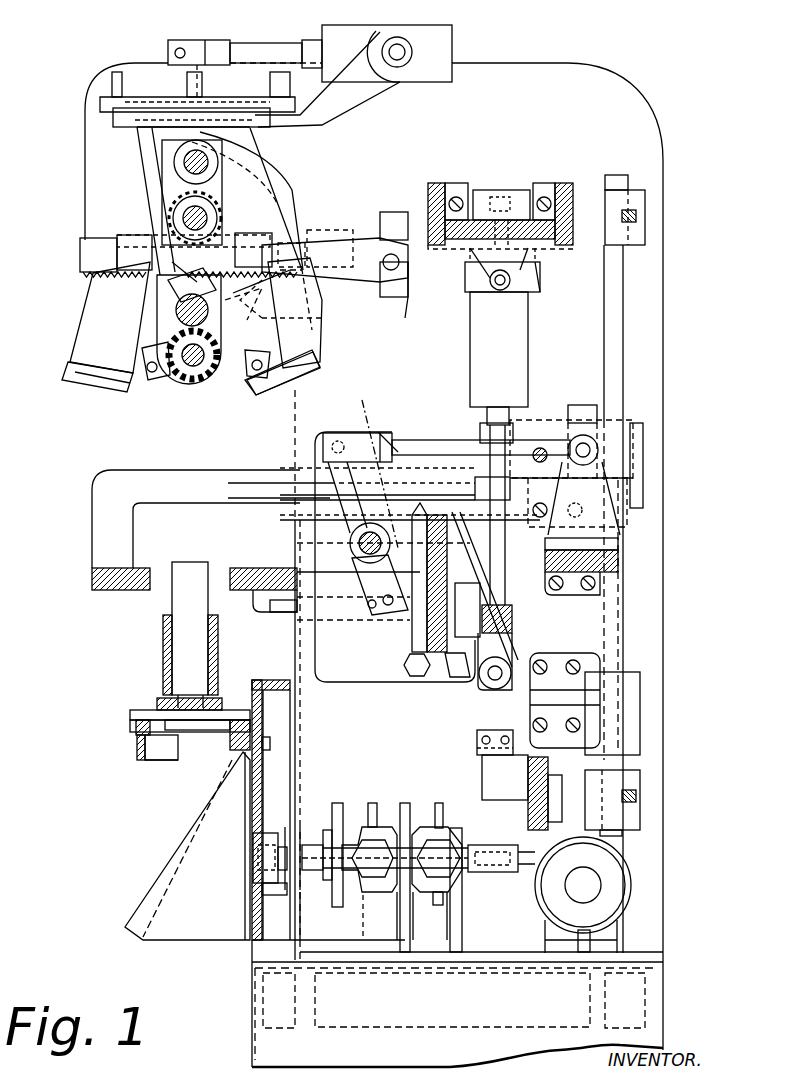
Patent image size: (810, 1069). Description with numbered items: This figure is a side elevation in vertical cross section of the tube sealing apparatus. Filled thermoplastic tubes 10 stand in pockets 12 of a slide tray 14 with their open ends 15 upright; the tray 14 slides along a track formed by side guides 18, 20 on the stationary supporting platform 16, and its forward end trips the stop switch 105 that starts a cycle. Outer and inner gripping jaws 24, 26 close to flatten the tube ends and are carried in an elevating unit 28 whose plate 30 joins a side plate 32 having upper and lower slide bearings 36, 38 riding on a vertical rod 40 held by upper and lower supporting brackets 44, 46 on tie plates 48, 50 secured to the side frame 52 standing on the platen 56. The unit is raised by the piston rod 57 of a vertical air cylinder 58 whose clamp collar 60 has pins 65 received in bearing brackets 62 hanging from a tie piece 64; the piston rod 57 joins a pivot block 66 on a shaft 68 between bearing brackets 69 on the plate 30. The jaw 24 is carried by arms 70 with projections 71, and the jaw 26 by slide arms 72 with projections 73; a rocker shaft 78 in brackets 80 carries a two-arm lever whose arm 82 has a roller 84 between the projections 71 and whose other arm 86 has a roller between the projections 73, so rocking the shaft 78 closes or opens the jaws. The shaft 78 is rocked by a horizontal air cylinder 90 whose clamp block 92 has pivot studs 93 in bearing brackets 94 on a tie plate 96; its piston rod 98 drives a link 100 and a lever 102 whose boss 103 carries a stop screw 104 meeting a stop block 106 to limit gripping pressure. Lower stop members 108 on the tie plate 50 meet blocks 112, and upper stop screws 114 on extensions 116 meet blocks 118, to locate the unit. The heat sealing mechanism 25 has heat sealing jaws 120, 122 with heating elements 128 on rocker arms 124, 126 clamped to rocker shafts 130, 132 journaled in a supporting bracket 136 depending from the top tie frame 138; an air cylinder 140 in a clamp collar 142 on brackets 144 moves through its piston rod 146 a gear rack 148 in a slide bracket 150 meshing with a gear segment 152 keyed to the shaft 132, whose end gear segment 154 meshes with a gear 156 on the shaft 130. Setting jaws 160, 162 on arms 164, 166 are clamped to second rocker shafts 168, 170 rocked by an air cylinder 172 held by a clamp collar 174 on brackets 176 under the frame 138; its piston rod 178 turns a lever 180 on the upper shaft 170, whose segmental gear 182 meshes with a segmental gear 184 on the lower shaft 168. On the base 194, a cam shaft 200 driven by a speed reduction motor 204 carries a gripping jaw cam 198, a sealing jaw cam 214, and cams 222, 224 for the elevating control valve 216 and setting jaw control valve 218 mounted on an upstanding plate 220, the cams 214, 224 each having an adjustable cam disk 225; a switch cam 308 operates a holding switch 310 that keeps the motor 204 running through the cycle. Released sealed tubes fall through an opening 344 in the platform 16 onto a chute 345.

The thermoplastic tubes 10 is at (173, 590).
The vertical pockets 12 is at (163, 645).
The slide tray 14 is at (146, 707).
The open ends 15 is at (191, 562).
The stationary supporting platform 16 is at (137, 745).
The side guide 18 is at (132, 720).
The side guide 20 is at (263, 722).
The outer gripping jaw 24 is at (138, 588).
The heat sealing mechanism 25 is at (187, 393).
The inner gripping jaw 26 is at (253, 590).
The elevating unit 28 is at (380, 688).
The horizontally extended plate 30 is at (447, 550).
The side plate 32 is at (329, 673).
The upper slide bearing 36 is at (645, 457).
The lower slide bearing 38 is at (640, 709).
The vertical rod 40 is at (623, 343).
The upper supporting bracket 44 is at (648, 203).
The lower supporting bracket 46 is at (640, 815).
The tie plate 48 is at (562, 185).
The tie plate 50 is at (528, 810).
The side frame 52 is at (625, 96).
The platen 56 is at (638, 963).
The piston rod 57 is at (505, 548).
The vertically extended air cylinder 58 is at (520, 343).
The clamp collar 60 is at (538, 290).
The bearing brackets 62 is at (538, 275).
The tie piece 64 is at (545, 247).
The laterally extended pins 65 is at (500, 292).
The pivot block 66 is at (516, 649).
The shaft 68 is at (495, 680).
The bearing brackets 69 is at (500, 642).
The spaced arms 70 is at (92, 494).
The spaced projections 71 is at (402, 447).
The slide arms 72 is at (292, 615).
The spaced projections 73 is at (370, 610).
The rocker shaft 78 is at (351, 546).
The brackets 80 is at (350, 603).
The lever arm 82 is at (282, 508).
The roller 84 is at (390, 435).
The lever arm 86 is at (406, 661).
The horizontally extended air cylinder 90 is at (550, 420).
The clamp block 92 is at (585, 404).
The pivot studs 93 is at (583, 448).
The bearing brackets 94 is at (613, 498).
The tie plate 96 is at (620, 562).
The piston rod 98 is at (437, 432).
The link 100 is at (353, 434).
The lever 102 is at (378, 431).
The boss 103 is at (333, 532).
The adjustable stop screw 104 is at (320, 518).
The stop switch 105 is at (168, 762).
The stop block 106 is at (450, 520).
The lower stop members 108 is at (492, 771).
The blocks 112 is at (476, 746).
The upper stop screws 114 is at (497, 190).
The extensions 116 is at (466, 263).
The blocks 118 is at (465, 447).
The heat sealing jaw 120 is at (152, 370).
The heat sealing jaw 122 is at (242, 395).
The rocker arm 124 is at (158, 318).
The rocker arm 126 is at (321, 327).
The tubular electrical heating elements 128 is at (133, 378).
The rocker shaft 130 is at (169, 342).
The rocker shaft 132 is at (176, 302).
The supporting bracket 136 is at (141, 142).
The top tie frame 138 is at (100, 103).
The air cylinder 140 is at (412, 285).
The clamp collar 142 is at (395, 213).
The spaced brackets 144 is at (325, 226).
The piston rod 146 is at (325, 303).
The gear rack 148 is at (97, 240).
The slide bracket 150 is at (128, 238).
The gear segment 152 is at (162, 266).
The gear segment 154 is at (277, 310).
The gears 156 is at (209, 382).
The setting jaw 160 is at (85, 372).
The setting jaw 162 is at (254, 392).
The arm 164 is at (90, 290).
The arm 166 is at (320, 342).
The rocker shaft 168 is at (175, 220).
The rocker shaft 170 is at (175, 160).
The air cylinder 172 is at (449, 47).
The clamp collar 174 is at (409, 22).
The spaced brackets 176 is at (393, 110).
The piston rod 178 is at (280, 48).
The lever 180 is at (197, 50).
The segmental gear 182 is at (240, 183).
The segmental gears 184 is at (170, 200).
The base 194 is at (482, 948).
The cam 198 is at (338, 827).
The cam shaft 200 is at (310, 840).
The speed reduction motor 204 is at (617, 884).
The cam 214 is at (390, 810).
The elevating control valve 216 is at (375, 877).
The setting jaw control valve 218 is at (455, 875).
The upstanding plate 220 is at (423, 905).
The cam 222 is at (362, 803).
The cam 224 is at (430, 810).
The adjustable cam disk 225 is at (415, 803).
The switch cam 308 is at (262, 837).
The holding switch 310 is at (277, 890).
The opening 344 is at (195, 724).
The chute 345 is at (143, 897).